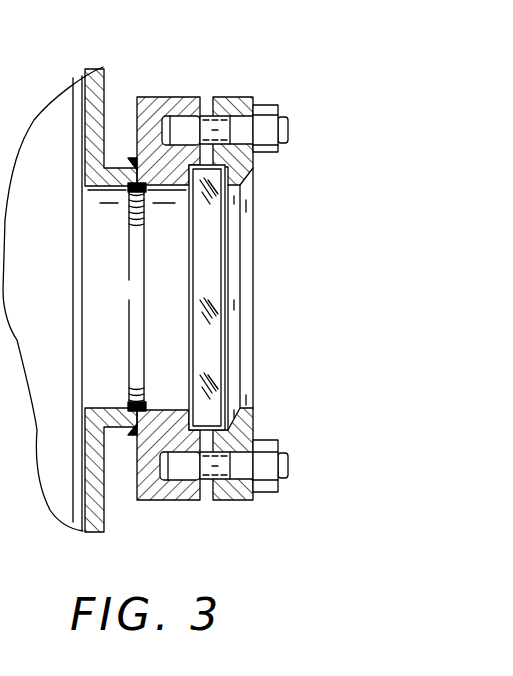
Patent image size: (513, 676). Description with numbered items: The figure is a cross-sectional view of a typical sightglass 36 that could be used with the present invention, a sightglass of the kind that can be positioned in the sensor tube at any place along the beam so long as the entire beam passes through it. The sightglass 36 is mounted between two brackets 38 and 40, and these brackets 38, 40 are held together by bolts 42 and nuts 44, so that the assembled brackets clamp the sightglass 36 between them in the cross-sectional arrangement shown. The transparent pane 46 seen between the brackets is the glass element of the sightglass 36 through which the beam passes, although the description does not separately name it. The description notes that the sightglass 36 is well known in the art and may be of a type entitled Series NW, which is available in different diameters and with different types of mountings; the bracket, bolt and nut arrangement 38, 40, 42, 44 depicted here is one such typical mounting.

The sightglass 36 is at (211, 36).
The bracket 38 is at (160, 98).
The bracket 40 is at (225, 97).
The bolt 42 is at (260, 152).
The nut 44 is at (264, 440).
The window pane 46 is at (188, 296).